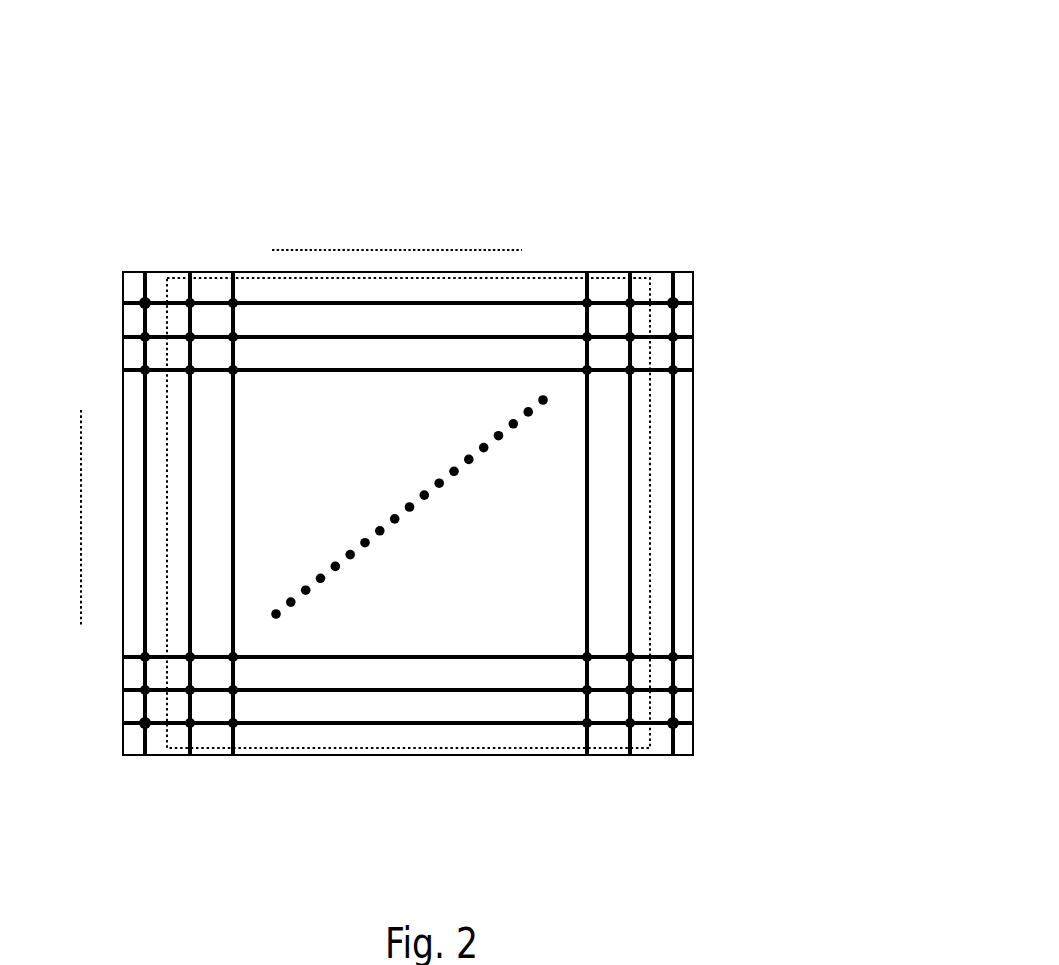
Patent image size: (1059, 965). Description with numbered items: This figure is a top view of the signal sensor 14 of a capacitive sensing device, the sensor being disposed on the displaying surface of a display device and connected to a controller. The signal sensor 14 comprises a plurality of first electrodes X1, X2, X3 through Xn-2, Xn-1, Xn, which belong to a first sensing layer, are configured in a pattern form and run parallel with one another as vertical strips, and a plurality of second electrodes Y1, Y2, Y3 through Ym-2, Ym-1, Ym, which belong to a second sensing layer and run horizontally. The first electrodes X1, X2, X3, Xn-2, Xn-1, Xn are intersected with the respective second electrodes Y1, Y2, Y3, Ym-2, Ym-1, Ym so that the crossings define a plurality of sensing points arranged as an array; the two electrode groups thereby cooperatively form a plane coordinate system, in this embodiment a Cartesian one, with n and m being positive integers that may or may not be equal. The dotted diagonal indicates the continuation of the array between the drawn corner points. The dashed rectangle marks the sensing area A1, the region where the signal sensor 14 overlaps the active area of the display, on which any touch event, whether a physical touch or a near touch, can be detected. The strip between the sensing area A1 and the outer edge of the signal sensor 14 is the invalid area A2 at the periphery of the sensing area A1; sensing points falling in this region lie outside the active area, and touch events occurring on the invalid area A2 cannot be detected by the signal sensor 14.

The signal sensor 14 is at (648, 90).
The sensing area A1 is at (476, 730).
The invalid area A2 is at (682, 470).
The first electrode X1 is at (128, 492).
The first electrode X2 is at (181, 492).
The first electrode X3 is at (236, 492).
The first electrode Xn-2 is at (572, 473).
The first electrode Xn-1 is at (626, 482).
The first electrode Xn is at (671, 490).
The second electrode Y1 is at (379, 727).
The second electrode Y2 is at (379, 697).
The second electrode Y3 is at (379, 664).
The second electrode Ym-2 is at (366, 364).
The second electrode Ym-1 is at (366, 334).
The second electrode Ym is at (377, 300).